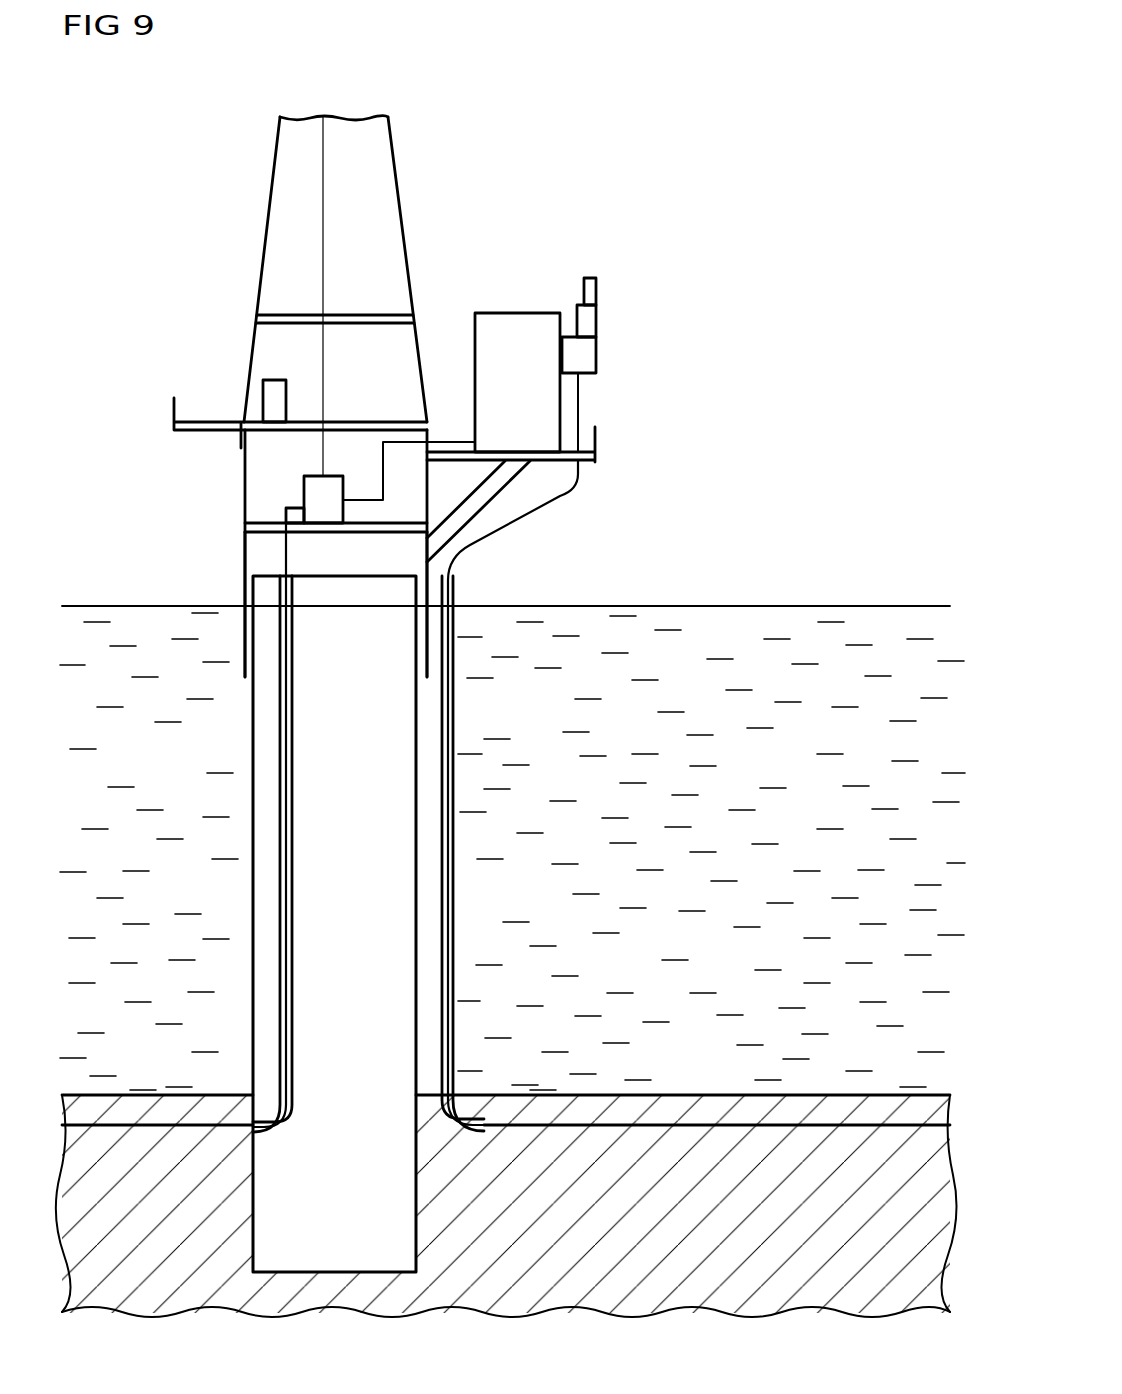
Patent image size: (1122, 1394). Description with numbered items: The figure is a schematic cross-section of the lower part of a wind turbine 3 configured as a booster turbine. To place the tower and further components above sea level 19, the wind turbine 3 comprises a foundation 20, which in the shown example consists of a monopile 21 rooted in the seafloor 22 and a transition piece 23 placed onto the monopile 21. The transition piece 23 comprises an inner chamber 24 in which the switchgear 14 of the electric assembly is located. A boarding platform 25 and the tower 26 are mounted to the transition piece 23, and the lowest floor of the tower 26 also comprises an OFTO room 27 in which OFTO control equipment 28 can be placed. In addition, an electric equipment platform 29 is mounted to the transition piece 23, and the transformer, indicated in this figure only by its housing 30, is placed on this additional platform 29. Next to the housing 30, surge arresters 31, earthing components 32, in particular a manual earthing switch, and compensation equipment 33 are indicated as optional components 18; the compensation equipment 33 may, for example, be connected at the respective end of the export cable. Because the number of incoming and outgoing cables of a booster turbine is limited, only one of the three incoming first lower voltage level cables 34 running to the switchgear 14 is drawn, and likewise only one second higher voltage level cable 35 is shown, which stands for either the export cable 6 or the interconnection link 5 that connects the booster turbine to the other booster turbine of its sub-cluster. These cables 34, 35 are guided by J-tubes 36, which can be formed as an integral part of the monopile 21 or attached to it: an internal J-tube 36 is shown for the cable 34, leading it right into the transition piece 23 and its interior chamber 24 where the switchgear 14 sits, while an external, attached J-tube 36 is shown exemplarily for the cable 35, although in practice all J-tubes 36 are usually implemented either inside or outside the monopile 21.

The wind turbine 3 is at (198, 252).
The tower 26 is at (268, 193).
The OFTO room 27 is at (273, 340).
The boarding platform 25 is at (208, 420).
The OFTO control equipment 28 is at (288, 396).
The inner chamber 24 is at (270, 462).
The switchgear 14 is at (318, 494).
The transition piece 23 is at (240, 558).
The additional platform 29 is at (452, 450).
The housing 30 is at (518, 313).
The optional components 18 is at (587, 261).
The surge arresters 31 is at (592, 292).
The earthing components 32 is at (592, 323).
The compensation equipment 33 is at (592, 355).
The monopile 21 is at (253, 875).
The J-tubes 36 is at (300, 698).
The second higher voltage level cable 35 is at (455, 885).
The foundation 20 is at (209, 798).
The sea level 19 is at (652, 605).
The interconnection link 5 is at (692, 1120).
The export cable 6 is at (506, 1176).
The first lower voltage level cable 34 is at (150, 1120).
The seafloor 22 is at (504, 1211).